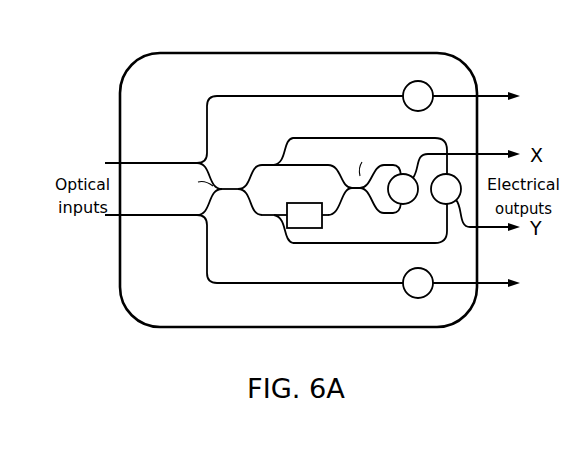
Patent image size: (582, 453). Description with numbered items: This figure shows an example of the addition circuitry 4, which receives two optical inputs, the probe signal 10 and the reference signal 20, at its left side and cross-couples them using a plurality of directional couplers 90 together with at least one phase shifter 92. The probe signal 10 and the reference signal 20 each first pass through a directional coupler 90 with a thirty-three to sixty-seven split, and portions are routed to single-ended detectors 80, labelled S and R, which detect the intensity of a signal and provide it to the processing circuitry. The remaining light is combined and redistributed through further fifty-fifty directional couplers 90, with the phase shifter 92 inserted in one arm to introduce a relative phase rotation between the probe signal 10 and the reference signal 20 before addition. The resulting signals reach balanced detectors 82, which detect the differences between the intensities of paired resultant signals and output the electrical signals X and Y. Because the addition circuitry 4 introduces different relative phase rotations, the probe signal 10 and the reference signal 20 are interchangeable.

The addition circuitry 4 is at (278, 247).
The probe signal 10 is at (140, 163).
The reference signal 20 is at (140, 215).
The detector 80 is at (413, 81).
The balanced detector 82 is at (448, 162).
The directional couplers 90 is at (188, 140).
The phase shifter 92 is at (307, 203).